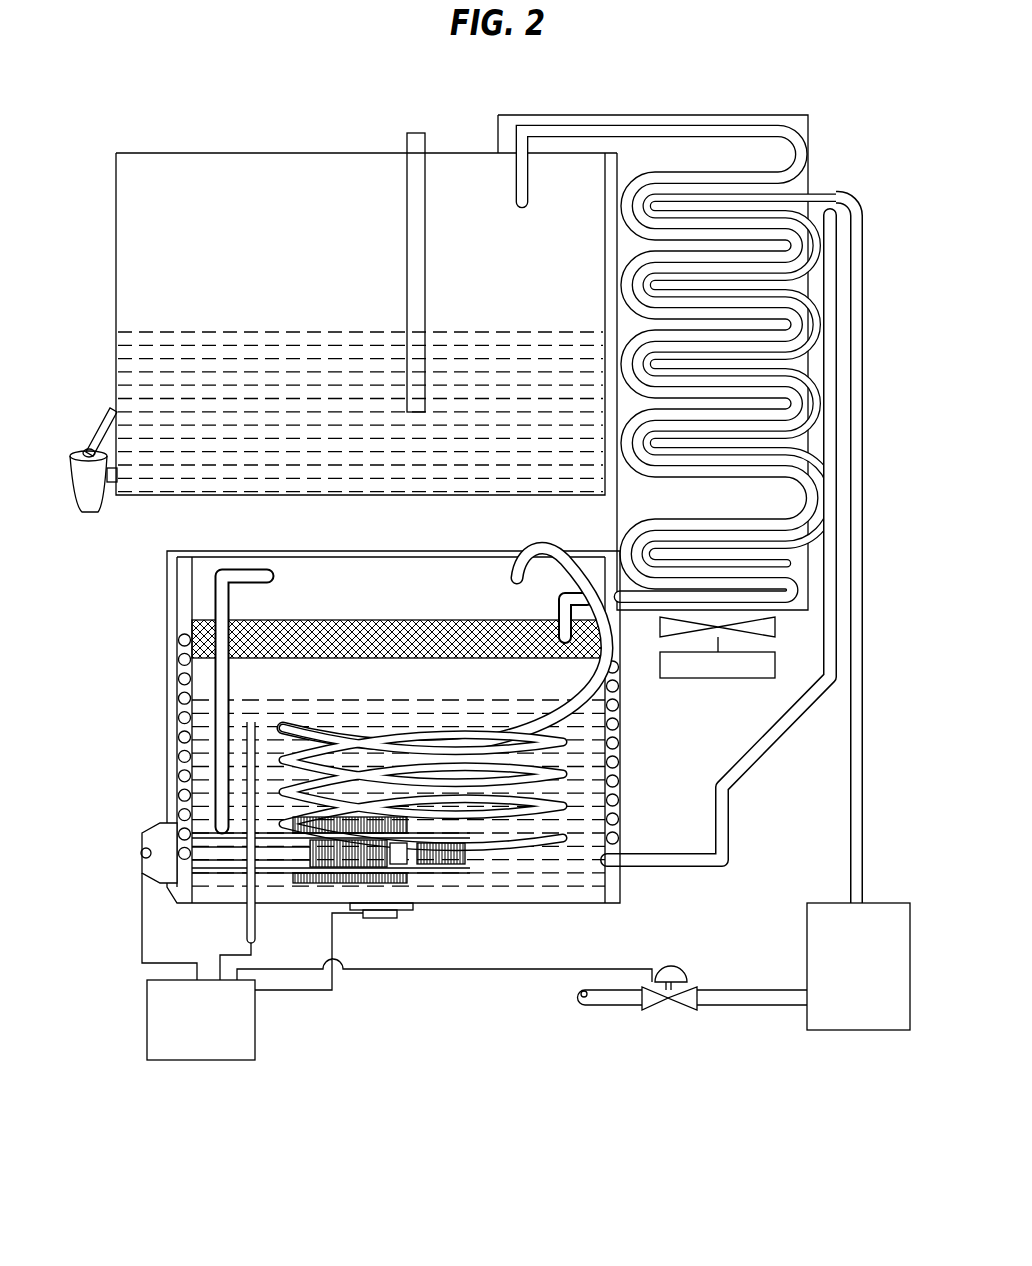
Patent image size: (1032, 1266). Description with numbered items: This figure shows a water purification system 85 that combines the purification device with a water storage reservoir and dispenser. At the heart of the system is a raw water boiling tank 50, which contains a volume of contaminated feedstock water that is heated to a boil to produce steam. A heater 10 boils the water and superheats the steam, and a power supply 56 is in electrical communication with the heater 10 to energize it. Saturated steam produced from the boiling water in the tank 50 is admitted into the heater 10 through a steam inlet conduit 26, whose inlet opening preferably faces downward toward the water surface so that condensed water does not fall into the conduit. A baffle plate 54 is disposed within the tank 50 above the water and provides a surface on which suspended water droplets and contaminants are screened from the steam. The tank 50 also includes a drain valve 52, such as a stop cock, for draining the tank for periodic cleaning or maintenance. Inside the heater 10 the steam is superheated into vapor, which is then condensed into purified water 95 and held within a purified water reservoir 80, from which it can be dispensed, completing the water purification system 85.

The water purification system 85 is at (309, 85).
The purified water reservoir 80 is at (203, 150).
The purified water 95 is at (140, 367).
The drain valve 52 is at (805, 492).
The raw water boiling tank 50 is at (178, 606).
The baffle plate 54 is at (385, 620).
The steam inlet conduit 26 is at (222, 693).
The heater 10 is at (150, 832).
The power supply 56 is at (185, 1062).